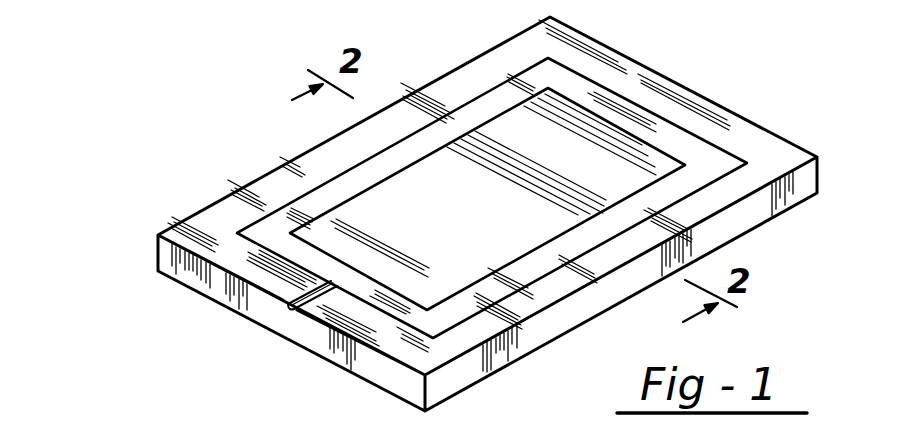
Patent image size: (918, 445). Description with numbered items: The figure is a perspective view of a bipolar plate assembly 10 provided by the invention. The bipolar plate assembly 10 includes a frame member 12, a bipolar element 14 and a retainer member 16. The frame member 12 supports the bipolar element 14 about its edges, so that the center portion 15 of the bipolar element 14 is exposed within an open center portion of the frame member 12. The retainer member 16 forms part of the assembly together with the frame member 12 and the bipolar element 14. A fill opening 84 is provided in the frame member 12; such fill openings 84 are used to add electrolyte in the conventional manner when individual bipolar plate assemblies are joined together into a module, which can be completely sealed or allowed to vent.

The bipolar plate assembly 10 is at (221, 326).
The frame member 12 is at (633, 68).
The bipolar element 14 is at (318, 225).
The center portion 15 is at (513, 243).
The retainer member 16 is at (361, 179).
The fill openings 84 is at (316, 310).